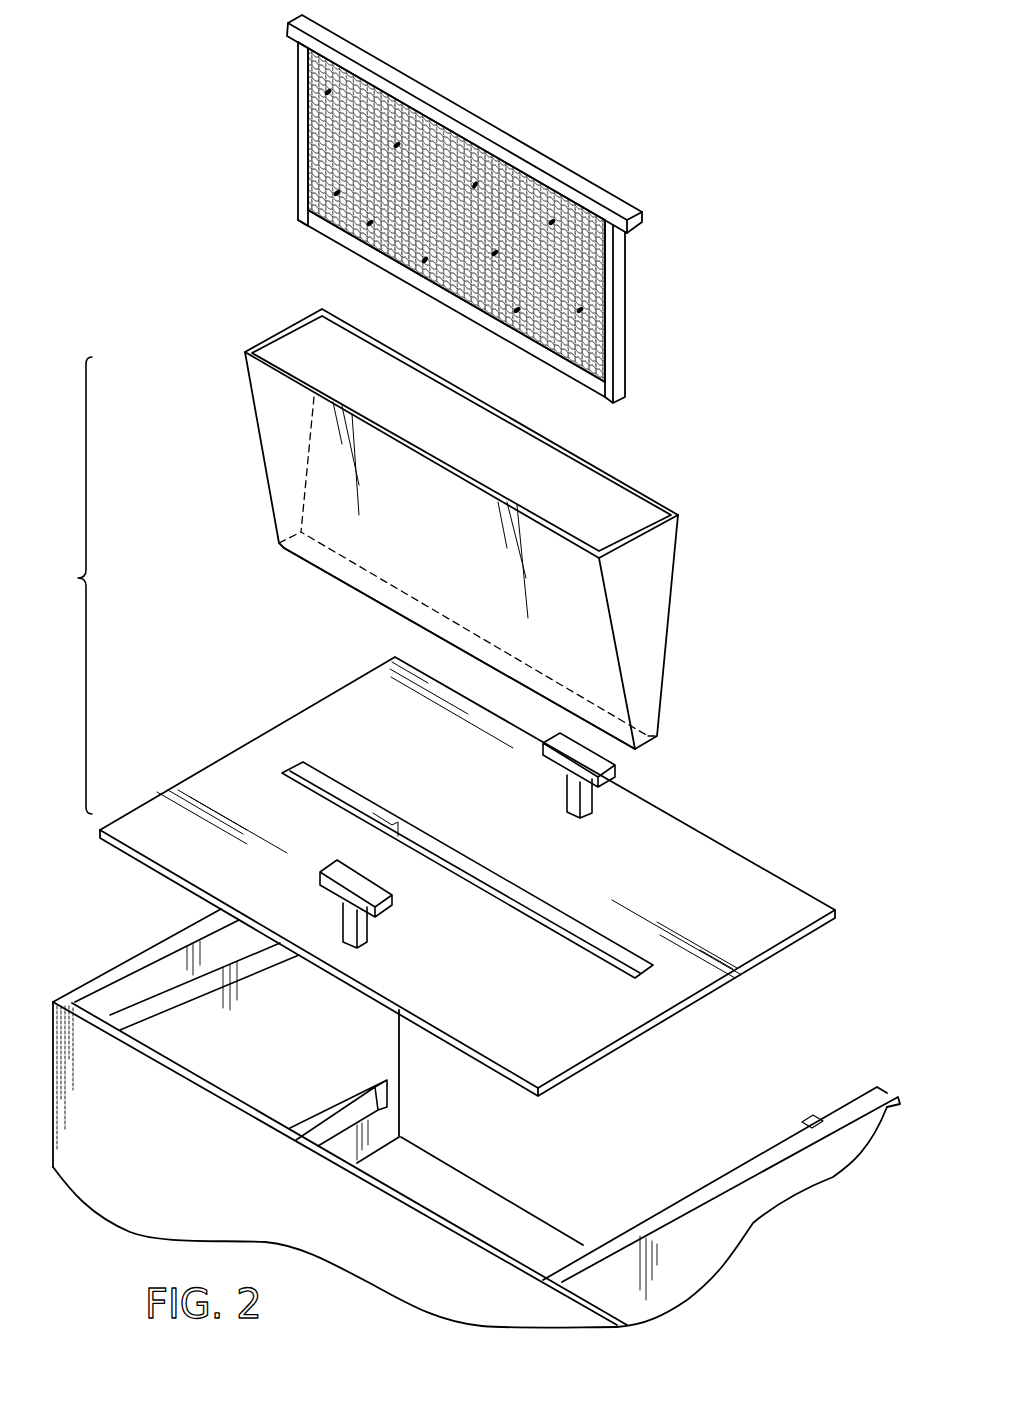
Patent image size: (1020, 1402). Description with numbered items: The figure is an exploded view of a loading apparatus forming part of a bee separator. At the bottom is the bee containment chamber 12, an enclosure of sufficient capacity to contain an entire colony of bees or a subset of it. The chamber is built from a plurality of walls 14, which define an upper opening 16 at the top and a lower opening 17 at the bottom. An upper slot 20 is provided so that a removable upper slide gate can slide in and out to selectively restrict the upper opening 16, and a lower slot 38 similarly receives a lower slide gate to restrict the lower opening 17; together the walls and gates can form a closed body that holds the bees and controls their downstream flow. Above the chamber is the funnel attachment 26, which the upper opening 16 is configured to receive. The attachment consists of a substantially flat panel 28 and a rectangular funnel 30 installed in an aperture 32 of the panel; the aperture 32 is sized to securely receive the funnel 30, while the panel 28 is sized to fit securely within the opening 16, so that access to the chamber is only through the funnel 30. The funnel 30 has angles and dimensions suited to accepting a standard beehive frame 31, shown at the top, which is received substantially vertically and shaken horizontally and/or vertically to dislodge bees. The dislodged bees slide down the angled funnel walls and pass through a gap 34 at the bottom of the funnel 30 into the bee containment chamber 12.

The bee containment chamber 12 is at (446, 1180).
The walls 14 is at (135, 957).
The upper opening 16 is at (762, 1070).
The lower opening 17 is at (482, 1235).
The upper slot 20 is at (126, 1012).
The funnel attachment 26 is at (67, 585).
The flat panel 28 is at (688, 840).
The rectangular funnel 30 is at (663, 610).
The beehive frame 31 is at (623, 302).
The aperture 32 is at (368, 815).
The gap 34 is at (322, 552).
The lower slot 38 is at (340, 1115).